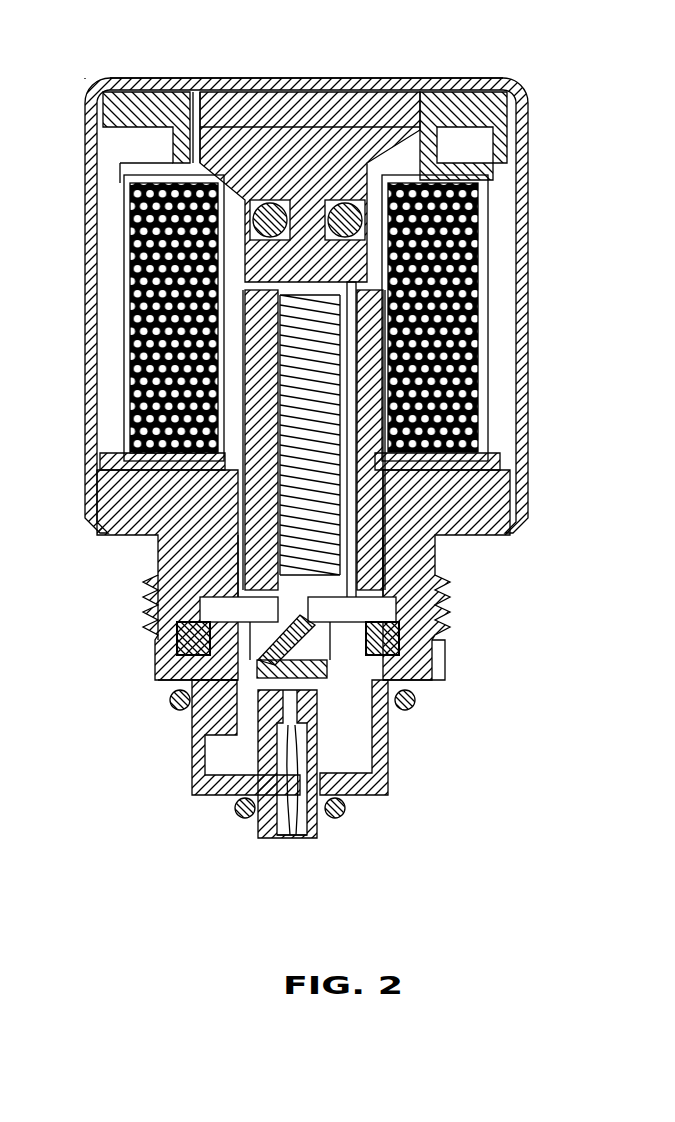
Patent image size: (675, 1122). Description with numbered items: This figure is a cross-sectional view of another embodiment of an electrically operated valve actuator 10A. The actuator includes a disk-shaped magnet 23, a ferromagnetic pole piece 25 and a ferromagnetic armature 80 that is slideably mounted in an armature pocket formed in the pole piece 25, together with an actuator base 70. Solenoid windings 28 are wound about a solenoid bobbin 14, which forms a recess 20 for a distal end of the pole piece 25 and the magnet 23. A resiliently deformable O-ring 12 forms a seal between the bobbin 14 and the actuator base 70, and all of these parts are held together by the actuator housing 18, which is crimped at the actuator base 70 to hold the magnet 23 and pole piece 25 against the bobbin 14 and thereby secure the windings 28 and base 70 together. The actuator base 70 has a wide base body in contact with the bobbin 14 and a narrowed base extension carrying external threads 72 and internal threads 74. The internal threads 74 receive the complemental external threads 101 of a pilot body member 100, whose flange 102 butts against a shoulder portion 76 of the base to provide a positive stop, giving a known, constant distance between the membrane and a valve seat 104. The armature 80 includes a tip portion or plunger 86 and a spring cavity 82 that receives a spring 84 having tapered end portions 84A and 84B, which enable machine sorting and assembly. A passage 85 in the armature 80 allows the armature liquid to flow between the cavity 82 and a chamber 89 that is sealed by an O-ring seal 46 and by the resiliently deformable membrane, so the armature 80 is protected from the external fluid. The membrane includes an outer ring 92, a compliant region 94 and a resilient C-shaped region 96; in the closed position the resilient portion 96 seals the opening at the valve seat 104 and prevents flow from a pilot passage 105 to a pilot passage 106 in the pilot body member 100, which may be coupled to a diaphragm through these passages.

The valve actuator 10A is at (118, 915).
The O-ring 12 is at (105, 495).
The solenoid bobbin 14 is at (120, 100).
The actuator housing 18 is at (528, 288).
The recess 20 is at (193, 92).
The magnet 23 is at (400, 80).
The pole piece 25 is at (318, 135).
The solenoid windings 28 is at (445, 240).
The O-ring seal 46 is at (350, 212).
The actuator base 70 is at (435, 505).
The external threads 72 is at (150, 625).
The internal threads 74 is at (432, 660).
The shoulder portion 76 is at (168, 692).
The armature 80 is at (147, 583).
The spring cavity 82 is at (345, 355).
The spring 84 is at (280, 340).
The tapered end portion 84A is at (290, 300).
The tapered end portion 84B is at (158, 563).
The passage 85 is at (370, 604).
The plunger 86 is at (265, 665).
The chamber 89 is at (400, 628).
The outer ring 92 is at (178, 650).
The compliant region 94 is at (352, 652).
The C-shaped region 96 is at (215, 780).
The pilot body member 100 is at (300, 662).
The external threads 101 is at (417, 695).
The flange 102 is at (190, 700).
The valve seat 104 is at (298, 822).
The pilot passage 105 is at (210, 792).
The pilot passage 106 is at (285, 822).